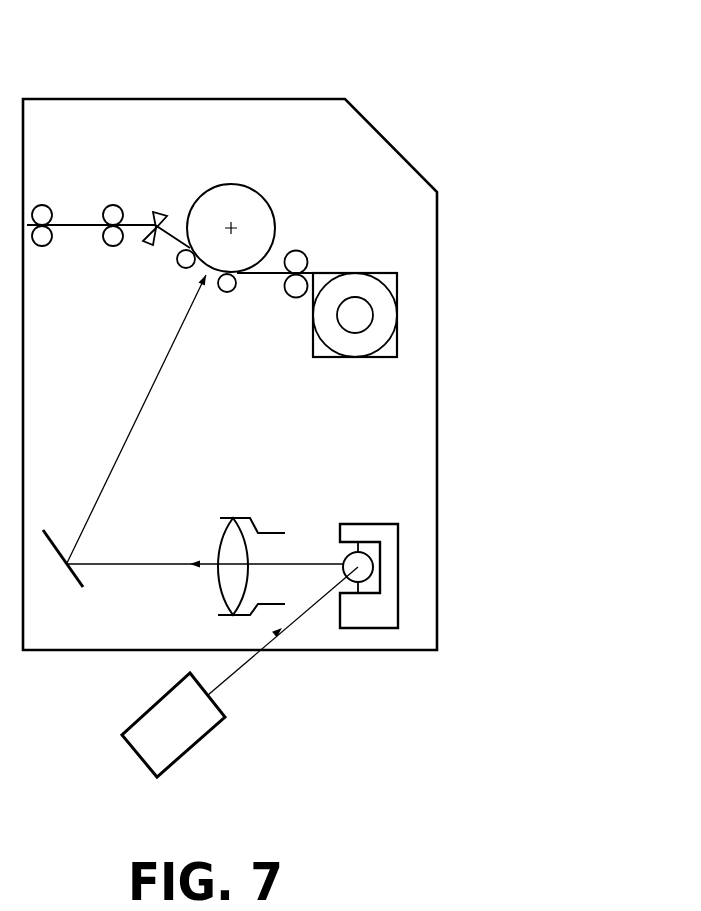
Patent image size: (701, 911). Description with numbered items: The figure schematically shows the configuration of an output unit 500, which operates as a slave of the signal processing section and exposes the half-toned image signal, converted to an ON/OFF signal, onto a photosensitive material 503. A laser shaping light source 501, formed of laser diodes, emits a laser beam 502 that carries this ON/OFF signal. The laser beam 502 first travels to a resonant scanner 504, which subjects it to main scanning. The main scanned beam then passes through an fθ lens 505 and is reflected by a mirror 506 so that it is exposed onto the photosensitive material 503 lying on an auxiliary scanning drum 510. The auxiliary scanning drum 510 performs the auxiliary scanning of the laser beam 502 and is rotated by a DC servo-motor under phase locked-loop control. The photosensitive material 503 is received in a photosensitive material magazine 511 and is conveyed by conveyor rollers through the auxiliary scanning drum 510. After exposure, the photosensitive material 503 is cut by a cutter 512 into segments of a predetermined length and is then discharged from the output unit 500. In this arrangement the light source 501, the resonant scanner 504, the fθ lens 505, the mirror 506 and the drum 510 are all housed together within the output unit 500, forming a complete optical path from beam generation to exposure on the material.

The output unit 500 is at (399, 112).
The laser shaping light source 501 is at (197, 743).
The laser beam 502 is at (243, 666).
The photosensitive material 503 is at (76, 224).
The resonant scanner 504 is at (399, 597).
The fθ lens 505 is at (231, 518).
The mirror 506 is at (67, 568).
The auxiliary scanning drum 510 is at (212, 185).
The photosensitive material magazine 511 is at (397, 315).
The cutter 512 is at (147, 240).